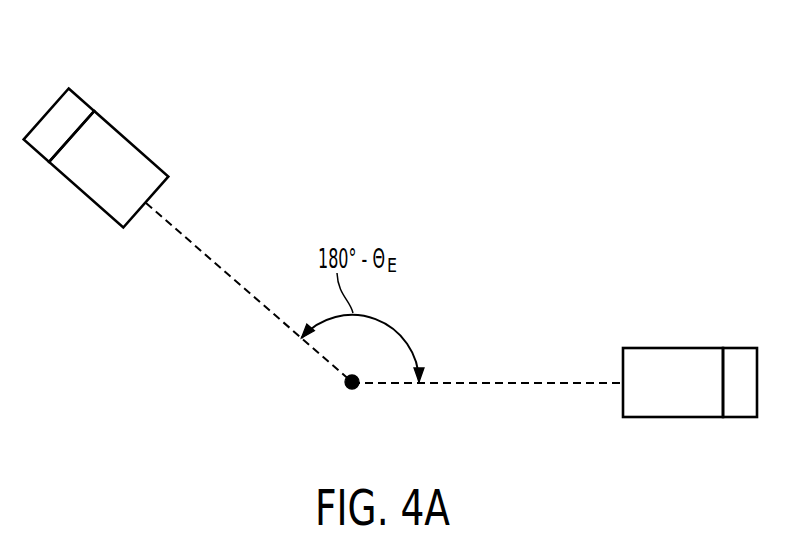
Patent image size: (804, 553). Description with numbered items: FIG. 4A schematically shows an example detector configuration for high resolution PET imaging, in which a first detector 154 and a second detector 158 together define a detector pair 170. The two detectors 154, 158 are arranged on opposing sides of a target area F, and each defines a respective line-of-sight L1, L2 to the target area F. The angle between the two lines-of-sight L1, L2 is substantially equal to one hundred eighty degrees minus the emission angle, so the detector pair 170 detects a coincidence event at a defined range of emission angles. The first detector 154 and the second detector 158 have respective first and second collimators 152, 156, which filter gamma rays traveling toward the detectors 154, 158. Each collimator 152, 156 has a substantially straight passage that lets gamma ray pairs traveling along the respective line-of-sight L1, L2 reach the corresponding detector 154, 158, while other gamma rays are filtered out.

The detector pair 170 is at (393, 251).
The first collimator 152 is at (680, 402).
The first detector 154 is at (742, 402).
The second collimator 156 is at (105, 190).
The second detector 158 is at (40, 142).
The line-of-sight L1 is at (495, 383).
The line-of-sight L2 is at (250, 292).
The target area F is at (348, 388).